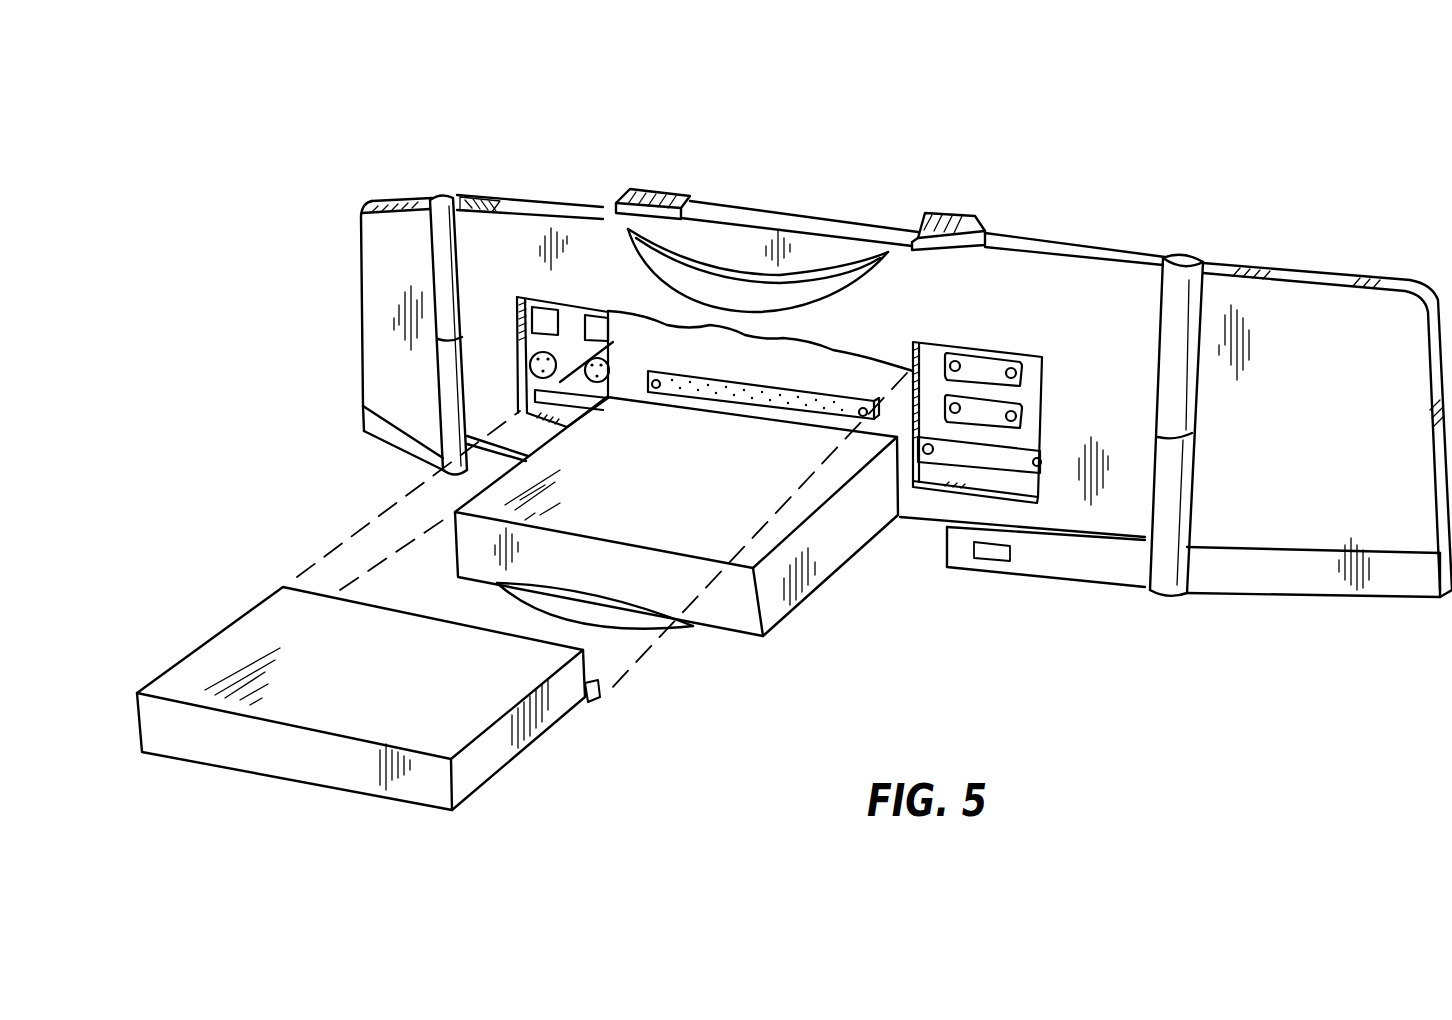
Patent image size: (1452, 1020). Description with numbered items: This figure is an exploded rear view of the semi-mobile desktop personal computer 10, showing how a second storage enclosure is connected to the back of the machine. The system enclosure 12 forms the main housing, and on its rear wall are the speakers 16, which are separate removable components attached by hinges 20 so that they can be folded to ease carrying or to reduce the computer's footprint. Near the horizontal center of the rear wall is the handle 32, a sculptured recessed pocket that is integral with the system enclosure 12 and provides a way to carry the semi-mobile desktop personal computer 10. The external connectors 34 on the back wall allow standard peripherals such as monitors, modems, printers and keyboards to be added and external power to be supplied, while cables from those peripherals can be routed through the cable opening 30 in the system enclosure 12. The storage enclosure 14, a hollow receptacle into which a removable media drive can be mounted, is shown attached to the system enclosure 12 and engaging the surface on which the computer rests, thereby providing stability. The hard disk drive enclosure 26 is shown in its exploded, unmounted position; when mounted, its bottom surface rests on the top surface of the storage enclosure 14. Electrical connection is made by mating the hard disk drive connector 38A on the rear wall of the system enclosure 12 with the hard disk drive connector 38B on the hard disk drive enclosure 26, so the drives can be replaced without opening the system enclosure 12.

The semi-mobile desktop personal computer 10 is at (1235, 178).
The system enclosure 12 is at (1098, 590).
The storage enclosure 14 is at (813, 585).
The speakers 16 is at (402, 198).
The hinges 20 is at (447, 200).
The hard disk drive enclosure 26 is at (547, 743).
The cable opening 30 is at (930, 548).
The handle 32 is at (797, 268).
The external connectors 34 is at (1043, 390).
The hard disk drive connector 38A is at (598, 700).
The hard disk drive connector 38B is at (848, 385).